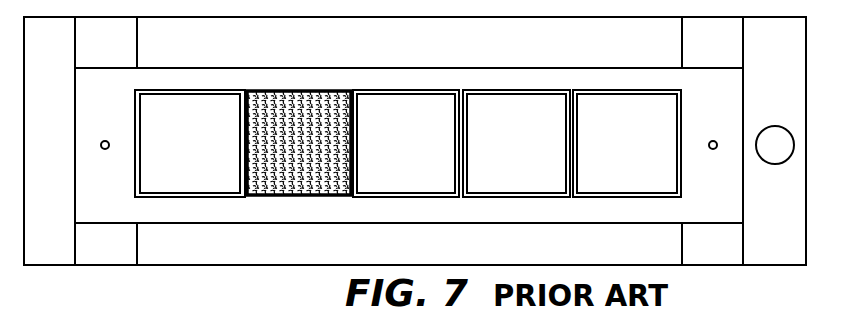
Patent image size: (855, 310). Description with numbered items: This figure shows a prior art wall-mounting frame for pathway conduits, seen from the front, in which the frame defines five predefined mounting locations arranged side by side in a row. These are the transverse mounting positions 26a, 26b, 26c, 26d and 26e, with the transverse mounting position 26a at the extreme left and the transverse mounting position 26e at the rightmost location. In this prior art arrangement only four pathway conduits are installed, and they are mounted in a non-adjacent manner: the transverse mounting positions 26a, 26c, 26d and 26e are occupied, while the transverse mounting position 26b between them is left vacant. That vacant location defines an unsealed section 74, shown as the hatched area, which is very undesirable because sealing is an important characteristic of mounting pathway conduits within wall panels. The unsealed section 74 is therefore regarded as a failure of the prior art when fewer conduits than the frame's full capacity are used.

The transverse mounting position 26a is at (168, 148).
The transverse mounting position 26b is at (315, 90).
The transverse mounting position 26c is at (428, 148).
The transverse mounting position 26d is at (495, 148).
The transverse mounting position 26e is at (605, 148).
The unsealed section 74 is at (285, 197).